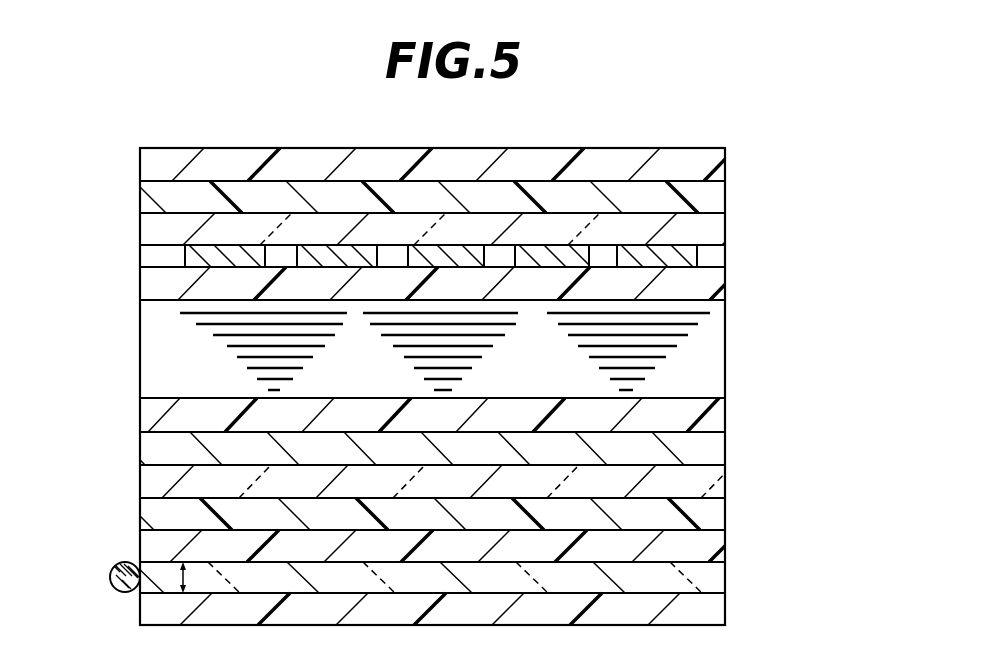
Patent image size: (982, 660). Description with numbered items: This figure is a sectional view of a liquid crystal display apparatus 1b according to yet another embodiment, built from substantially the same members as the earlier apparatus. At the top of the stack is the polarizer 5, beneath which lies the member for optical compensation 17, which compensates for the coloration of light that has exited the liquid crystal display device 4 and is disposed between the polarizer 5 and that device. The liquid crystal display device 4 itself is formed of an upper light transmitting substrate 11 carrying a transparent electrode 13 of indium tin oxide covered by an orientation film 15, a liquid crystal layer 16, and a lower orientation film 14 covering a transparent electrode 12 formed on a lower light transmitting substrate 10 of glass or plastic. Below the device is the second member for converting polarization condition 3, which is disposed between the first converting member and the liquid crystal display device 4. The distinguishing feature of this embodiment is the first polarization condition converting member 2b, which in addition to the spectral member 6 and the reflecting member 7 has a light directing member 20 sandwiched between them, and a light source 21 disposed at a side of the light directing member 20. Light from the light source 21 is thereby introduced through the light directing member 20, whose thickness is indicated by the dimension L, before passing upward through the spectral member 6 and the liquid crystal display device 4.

The liquid crystal display apparatus 1b is at (669, 134).
The polarizer 5 is at (712, 158).
The member for optical compensation 17 is at (712, 196).
The liquid crystal display device 4 is at (742, 212).
The light transmitting substrate 11 is at (172, 230).
The transparent electrode 13 is at (178, 259).
The orientation film 15 is at (165, 287).
The liquid crystal layer 16 is at (158, 344).
The orientation film 14 is at (150, 415).
The transparent electrode 12 is at (165, 448).
The light transmitting substrate 10 is at (165, 483).
The second member for converting polarization condition 3 is at (712, 514).
The first polarization condition converting member 2b is at (797, 523).
The spectral member 6 is at (712, 536).
The light directing member 20 is at (712, 572).
The reflecting member 7 is at (712, 603).
The light source 21 is at (112, 569).
The thickness of light guide plate L is at (180, 580).